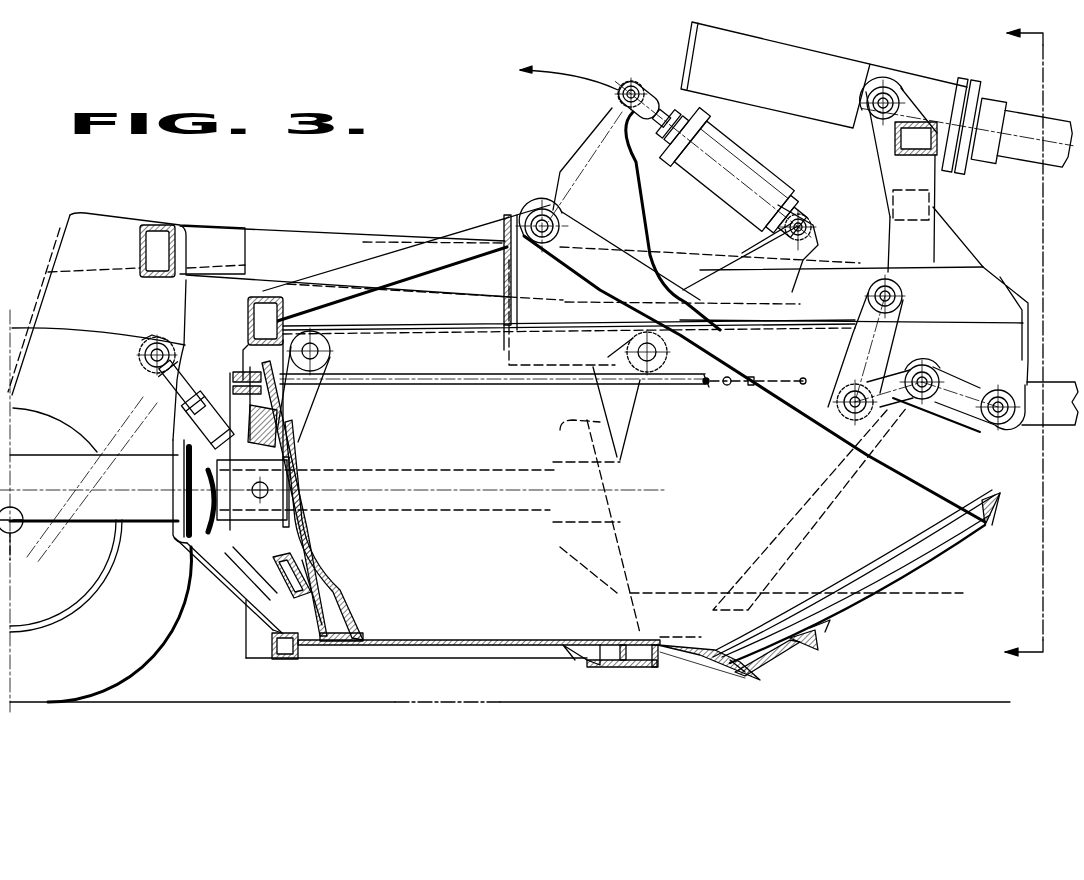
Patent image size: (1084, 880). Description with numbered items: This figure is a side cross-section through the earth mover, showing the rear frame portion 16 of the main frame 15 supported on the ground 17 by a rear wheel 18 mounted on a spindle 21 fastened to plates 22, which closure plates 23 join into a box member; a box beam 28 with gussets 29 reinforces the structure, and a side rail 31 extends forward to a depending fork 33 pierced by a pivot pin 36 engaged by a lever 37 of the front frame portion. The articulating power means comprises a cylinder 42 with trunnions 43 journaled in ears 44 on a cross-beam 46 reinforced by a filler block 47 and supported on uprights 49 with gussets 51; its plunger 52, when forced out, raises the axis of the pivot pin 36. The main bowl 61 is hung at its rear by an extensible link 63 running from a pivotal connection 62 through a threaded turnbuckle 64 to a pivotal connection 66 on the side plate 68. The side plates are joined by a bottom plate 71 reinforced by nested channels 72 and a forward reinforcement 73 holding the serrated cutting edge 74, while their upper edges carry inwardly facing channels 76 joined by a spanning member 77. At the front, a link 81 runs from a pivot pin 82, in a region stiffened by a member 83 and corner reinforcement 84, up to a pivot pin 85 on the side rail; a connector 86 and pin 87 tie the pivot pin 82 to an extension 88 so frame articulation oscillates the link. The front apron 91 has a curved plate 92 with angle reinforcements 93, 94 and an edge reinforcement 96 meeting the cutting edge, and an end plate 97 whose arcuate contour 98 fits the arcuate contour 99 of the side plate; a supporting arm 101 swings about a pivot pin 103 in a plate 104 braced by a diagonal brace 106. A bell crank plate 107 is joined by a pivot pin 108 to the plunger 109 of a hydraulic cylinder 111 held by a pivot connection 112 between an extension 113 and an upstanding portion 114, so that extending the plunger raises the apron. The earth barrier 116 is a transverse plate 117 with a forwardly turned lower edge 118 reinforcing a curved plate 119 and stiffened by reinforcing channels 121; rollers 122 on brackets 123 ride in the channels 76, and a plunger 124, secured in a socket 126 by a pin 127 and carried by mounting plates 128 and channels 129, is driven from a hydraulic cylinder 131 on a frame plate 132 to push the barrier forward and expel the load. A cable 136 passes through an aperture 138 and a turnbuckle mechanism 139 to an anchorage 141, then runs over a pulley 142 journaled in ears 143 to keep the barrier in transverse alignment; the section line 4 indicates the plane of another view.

The section line 4- 4 is at (1026, 348).
The main frame 15 is at (399, 241).
The frame portion 16 is at (293, 237).
The ground 17 is at (547, 705).
The rear wheels 18 is at (133, 663).
The spindle 21 is at (25, 548).
The plates 22 is at (48, 272).
The closure plates 23 is at (48, 291).
The box beam 28 is at (150, 278).
The gussets 29 is at (110, 222).
The side rail 31 is at (336, 244).
The depending fork 33 is at (987, 340).
The pivot pins 36 is at (995, 425).
The lever 37 is at (1030, 425).
The cylinder 42 is at (838, 65).
The trunnions 43 is at (880, 112).
The ears 44 is at (908, 95).
The cross-beam 46 is at (895, 148).
The filler block 47 is at (890, 213).
The uprights 49 is at (925, 232).
The gussets 51 is at (960, 252).
The plunger 52 is at (1018, 158).
The main bowl 61 is at (430, 655).
The pivotal connection 62 is at (148, 360).
The extensible link 63 is at (165, 398).
The threaded turnbuckle 64 is at (182, 420).
The pivotal connection 66 is at (245, 548).
The side plate 68 is at (248, 655).
The bottom plate 71 is at (490, 655).
The nested channels 72 is at (290, 657).
The reinforcement 73 is at (628, 660).
The serrated cutting edge 74 is at (722, 672).
The channels 76 is at (432, 368).
The spanning member 77 is at (247, 318).
The link 81 is at (887, 340).
The pivot pin 82 is at (843, 405).
The member 83 is at (765, 523).
The corner reinforcement 84 is at (800, 592).
The pivot pin 85 is at (903, 297).
The connector 86 is at (897, 410).
The pin 87 is at (935, 376).
The extension 88 is at (967, 410).
The front apron 91 is at (958, 582).
The curved plate 92 is at (905, 600).
The angle reinforcement 93 is at (812, 652).
The angle reinforcement 94 is at (990, 510).
The edge reinforcement 96 is at (768, 663).
The plate 97 is at (919, 557).
The arcuate contour 98 is at (855, 578).
The arcuate contour 99 is at (866, 572).
The supporting arm 101 is at (893, 464).
The pivot pins 103 is at (538, 212).
The plates 104 is at (700, 260).
The diagonal braces 106 is at (478, 232).
The bell crank plate 107 is at (633, 212).
The pivot pin 108 is at (621, 96).
The plunger 109 is at (640, 92).
The hydraulic cylinder 111 is at (742, 158).
The pivot connection 112 is at (808, 232).
The extension 113 is at (795, 225).
The upstanding portion 114 is at (803, 250).
The earth barrier 116 is at (298, 454).
The transverse plate 117 is at (305, 562).
The forwardly turned lower edge 118 is at (350, 628).
The curved plate 119 is at (338, 598).
The reinforcing channels 121 is at (282, 402).
The rollers 122 is at (333, 352).
The brackets 123 is at (308, 392).
The plunger 124 is at (512, 515).
The socket 126 is at (265, 477).
The pin 127 is at (268, 490).
The mounting plates 128 is at (226, 598).
The channels 129 is at (247, 410).
The hydraulic cylinder 131 is at (76, 520).
The frame plate 132 is at (205, 553).
The cable 136 is at (526, 378).
The aperture 138 is at (708, 386).
The turnbuckle mechanism 139 is at (752, 388).
The anchorage 141 is at (805, 385).
The pulley 142 is at (245, 375).
The ears 143 is at (240, 396).